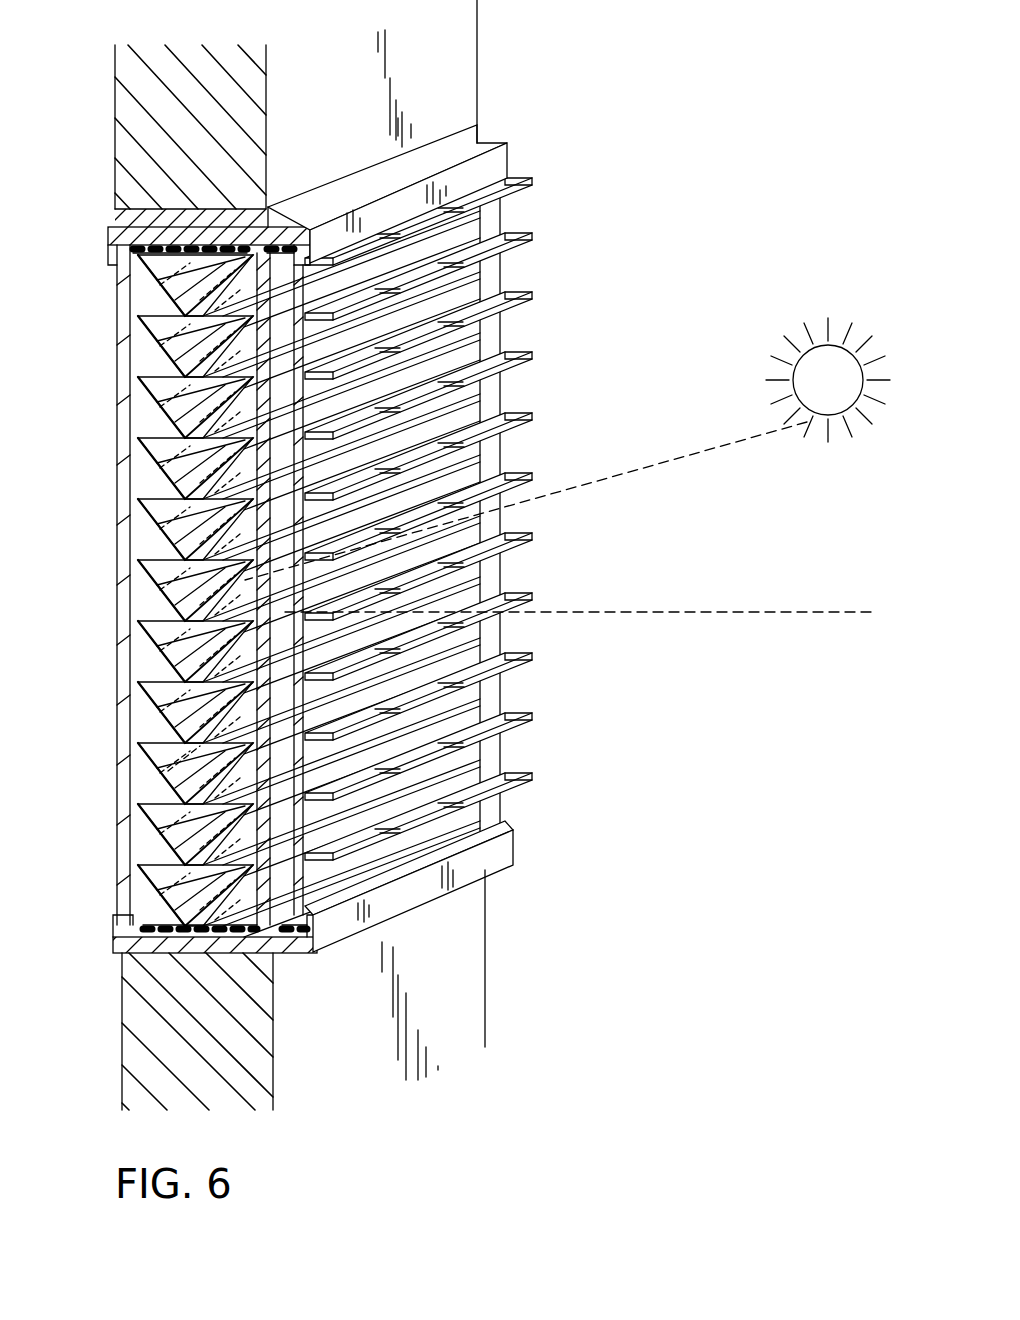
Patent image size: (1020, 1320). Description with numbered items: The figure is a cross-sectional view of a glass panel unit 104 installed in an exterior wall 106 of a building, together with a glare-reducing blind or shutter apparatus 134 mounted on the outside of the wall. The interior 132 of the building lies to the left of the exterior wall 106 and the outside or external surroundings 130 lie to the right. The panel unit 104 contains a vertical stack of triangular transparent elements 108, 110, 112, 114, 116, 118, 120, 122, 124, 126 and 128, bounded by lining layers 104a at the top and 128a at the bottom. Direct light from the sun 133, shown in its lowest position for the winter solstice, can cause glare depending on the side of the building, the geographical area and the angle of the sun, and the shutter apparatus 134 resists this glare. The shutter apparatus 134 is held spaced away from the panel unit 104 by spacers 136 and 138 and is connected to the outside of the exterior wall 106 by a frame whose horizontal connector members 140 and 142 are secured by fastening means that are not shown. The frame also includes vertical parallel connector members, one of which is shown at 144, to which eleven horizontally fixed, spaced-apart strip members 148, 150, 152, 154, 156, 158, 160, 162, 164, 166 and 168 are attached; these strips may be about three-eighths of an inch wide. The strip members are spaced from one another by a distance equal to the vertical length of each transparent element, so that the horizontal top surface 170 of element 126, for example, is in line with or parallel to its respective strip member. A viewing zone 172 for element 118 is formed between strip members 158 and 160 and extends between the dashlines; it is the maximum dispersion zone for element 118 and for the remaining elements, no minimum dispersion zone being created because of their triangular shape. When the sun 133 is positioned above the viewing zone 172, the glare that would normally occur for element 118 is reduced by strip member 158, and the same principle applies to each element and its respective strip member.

The panel unit 104 is at (600, 179).
The lining layer 104a is at (168, 248).
The exterior wall 106 is at (369, 83).
The transparent element 108 is at (172, 276).
The transparent element 110 is at (172, 337).
The transparent element 112 is at (172, 398).
The transparent element 114 is at (172, 460).
The transparent element 116 is at (172, 520).
The transparent element 118 is at (172, 581).
The transparent element 120 is at (172, 642).
The transparent element 122 is at (172, 703).
The transparent element 124 is at (172, 764).
The transparent element 126 is at (172, 825).
The transparent element 128 is at (172, 886).
The lining layer 128a is at (157, 953).
The outside or external surroundings 130 is at (727, 53).
The interior 132 is at (104, 138).
The sun 133 is at (822, 358).
The shutter apparatus 134 is at (587, 313).
The spacer 136 is at (292, 953).
The spacer 138 is at (264, 253).
The horizontal connector member 140 is at (502, 150).
The horizontal connector member 142 is at (513, 860).
The vertical connector member 144 is at (505, 262).
The strip member 148 is at (533, 178).
The strip member 150 is at (533, 233).
The strip member 152 is at (533, 294).
The strip member 154 is at (533, 353).
The strip member 156 is at (533, 414).
The strip member 158 is at (533, 474).
The strip member 160 is at (533, 534).
The strip member 162 is at (533, 594).
The strip member 164 is at (533, 654).
The strip member 166 is at (533, 714).
The strip member 168 is at (533, 774).
The horizontal top surface 170 is at (182, 786).
The viewing zone 172 is at (837, 550).